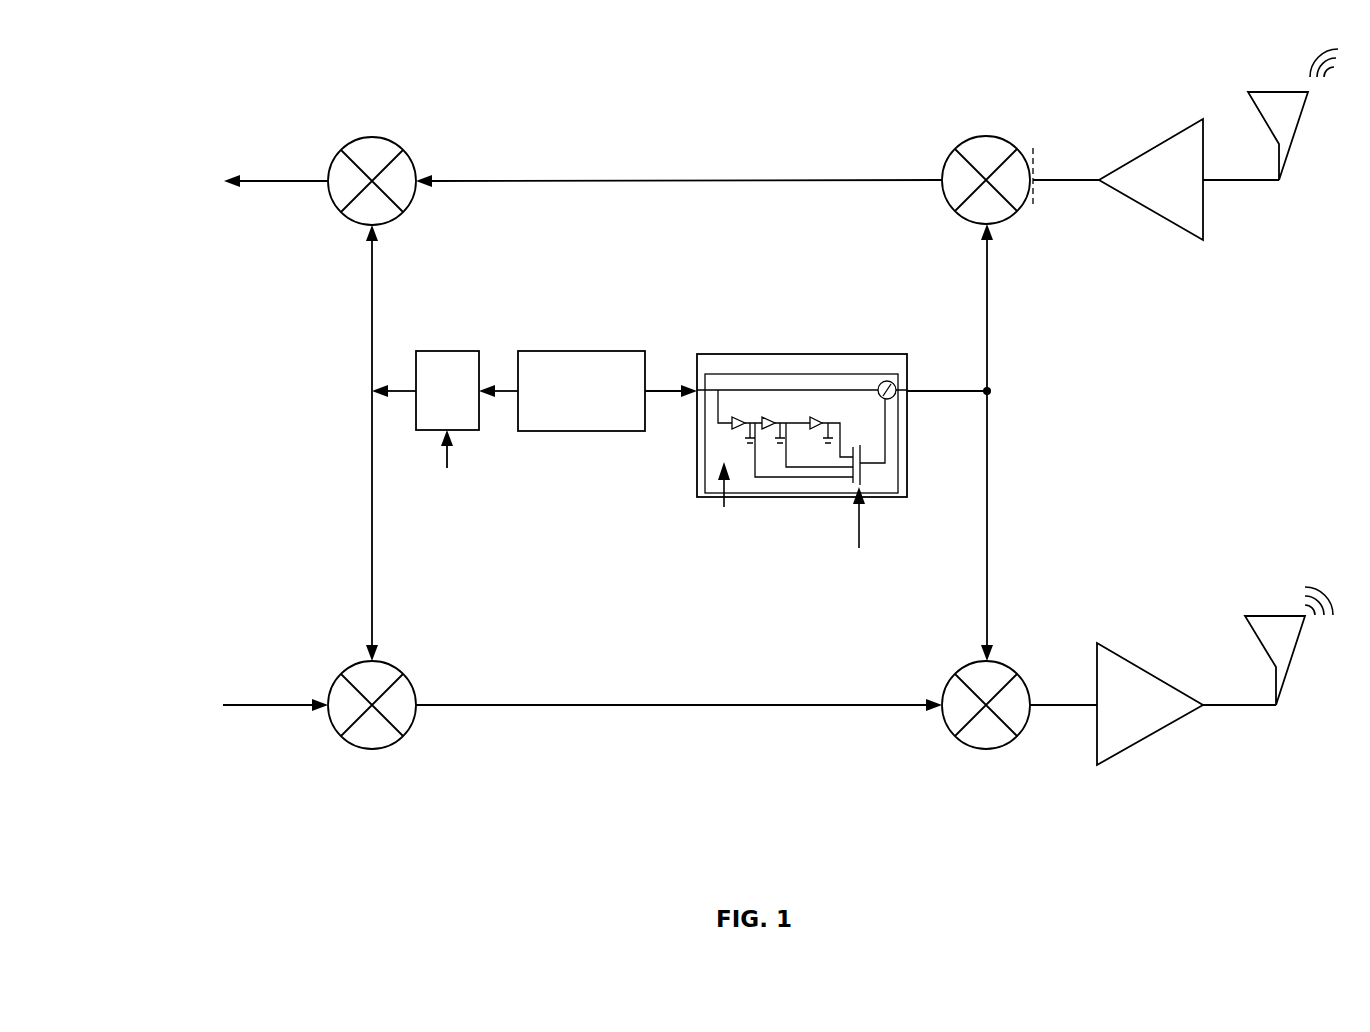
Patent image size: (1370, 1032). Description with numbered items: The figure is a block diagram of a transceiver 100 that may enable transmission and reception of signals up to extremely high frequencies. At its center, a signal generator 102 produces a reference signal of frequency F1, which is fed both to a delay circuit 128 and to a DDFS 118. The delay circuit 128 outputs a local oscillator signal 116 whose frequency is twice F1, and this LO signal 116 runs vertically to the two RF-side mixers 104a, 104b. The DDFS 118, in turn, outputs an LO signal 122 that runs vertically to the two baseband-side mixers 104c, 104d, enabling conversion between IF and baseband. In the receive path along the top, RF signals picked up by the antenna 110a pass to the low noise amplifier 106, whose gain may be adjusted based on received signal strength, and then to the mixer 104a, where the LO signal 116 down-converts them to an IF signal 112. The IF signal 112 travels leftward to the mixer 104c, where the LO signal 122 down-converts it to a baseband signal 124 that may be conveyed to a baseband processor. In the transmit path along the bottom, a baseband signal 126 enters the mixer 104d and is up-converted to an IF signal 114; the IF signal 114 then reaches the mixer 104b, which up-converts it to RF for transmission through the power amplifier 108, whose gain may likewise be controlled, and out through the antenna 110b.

The transceiver 100 is at (168, 62).
The signal generator 102 is at (609, 351).
The mixer 104a is at (970, 138).
The mixer 104b is at (965, 668).
The mixer 104c is at (363, 139).
The mixer 104d is at (357, 665).
The low noise amplifier 106 is at (1156, 146).
The power amplifier 108 is at (1126, 658).
The antenna 110a is at (1252, 92).
The antenna 110b is at (1262, 616).
The IF signal 112 is at (818, 181).
The IF signal 114 is at (830, 705).
The local oscillator signal 116 is at (957, 391).
The DDFS 118 is at (434, 351).
The LO signal 122 is at (371, 352).
The baseband signal 124 is at (292, 181).
The baseband signal 126 is at (292, 705).
The delay circuit 128 is at (800, 354).